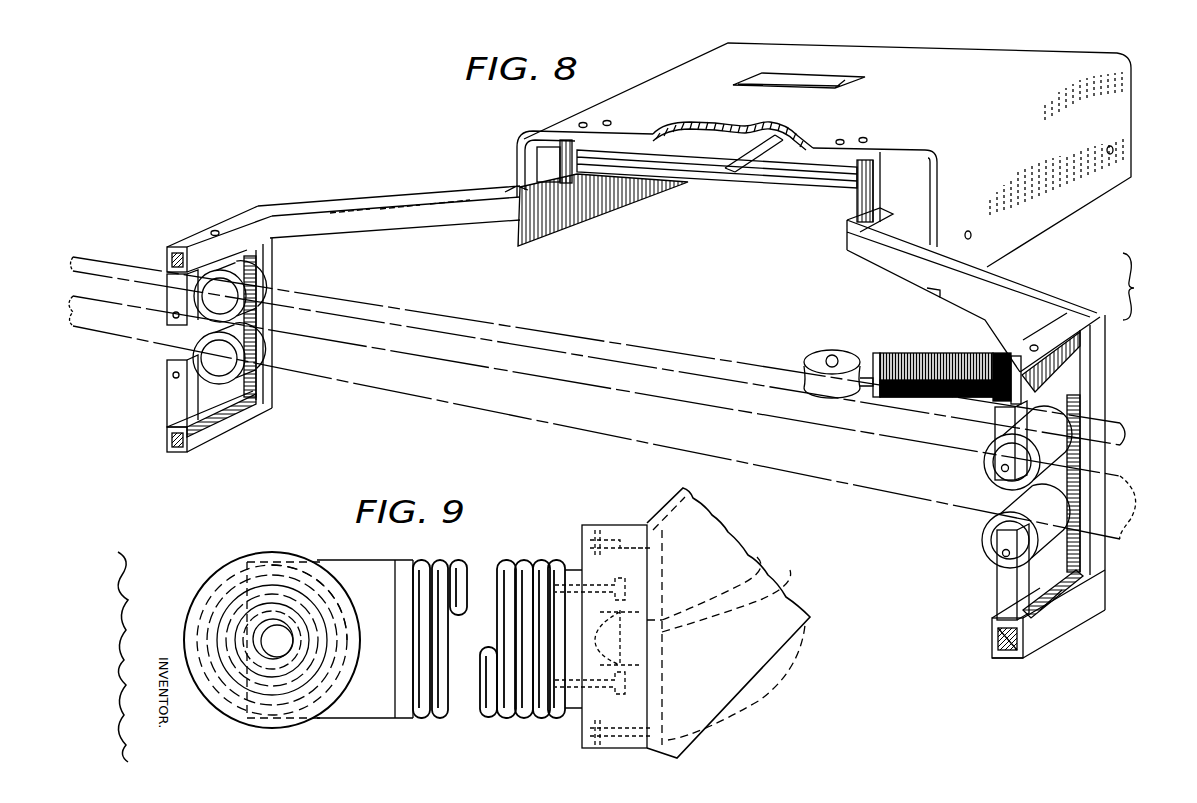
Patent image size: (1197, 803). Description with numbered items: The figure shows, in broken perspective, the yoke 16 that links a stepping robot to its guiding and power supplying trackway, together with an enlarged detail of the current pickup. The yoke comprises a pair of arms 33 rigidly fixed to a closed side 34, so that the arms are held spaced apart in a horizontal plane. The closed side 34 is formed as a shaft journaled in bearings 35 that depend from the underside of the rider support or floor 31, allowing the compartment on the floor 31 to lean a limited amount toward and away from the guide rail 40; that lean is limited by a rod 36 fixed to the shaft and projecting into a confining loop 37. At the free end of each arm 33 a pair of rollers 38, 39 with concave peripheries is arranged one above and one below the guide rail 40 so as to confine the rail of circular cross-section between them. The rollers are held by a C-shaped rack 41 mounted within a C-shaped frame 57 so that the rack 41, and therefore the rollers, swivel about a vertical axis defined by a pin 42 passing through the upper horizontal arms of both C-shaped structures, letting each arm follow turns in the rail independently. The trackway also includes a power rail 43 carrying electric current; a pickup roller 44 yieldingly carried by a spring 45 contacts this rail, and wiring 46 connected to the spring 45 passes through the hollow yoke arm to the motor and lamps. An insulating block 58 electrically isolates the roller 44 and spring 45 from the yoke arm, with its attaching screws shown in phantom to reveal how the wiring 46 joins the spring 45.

In FIG. 8, the yoke 16 is at (1142, 292).
In FIG. 8, the floor 31 is at (978, 77).
In FIG. 8, the yoke arm 33 is at (375, 203).
In FIG. 8, the closed side 34 is at (753, 173).
In FIG. 8, the bearing 35 is at (580, 143).
In FIG. 8, the rod 36 is at (748, 152).
In FIG. 8, the confining loop 37 is at (777, 153).
In FIG. 8, the roller 38 is at (238, 280).
In FIG. 8, the roller 39 is at (182, 357).
In FIG. 8, the guide rail 40 is at (1133, 488).
In FIG. 8, the C-shaped rack 41 is at (180, 398).
In FIG. 8, the pin 42 is at (212, 231).
In FIG. 8, the power rail 43 is at (750, 367).
In FIG. 8, the roller 44 is at (820, 364).
In FIG. 9, the roller 44 is at (218, 588).
In FIG. 8, the spring 45 is at (913, 362).
In FIG. 9, the spring 45 is at (500, 565).
In FIG. 9, the wiring 46 is at (768, 556).
In FIG. 8, the C-shaped frame 57 is at (1058, 612).
In FIG. 9, the insulating block 58 is at (617, 532).